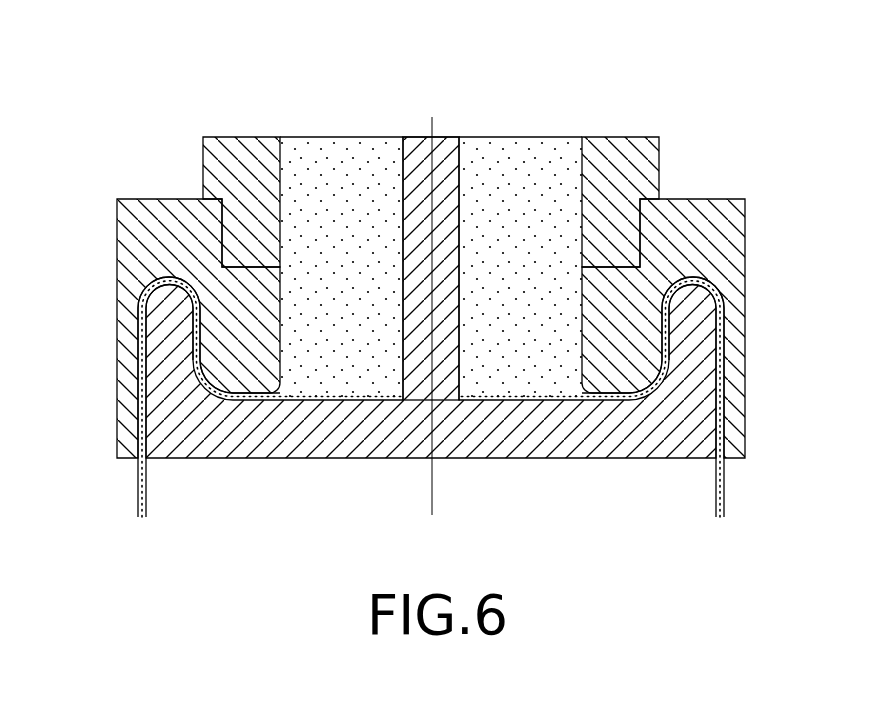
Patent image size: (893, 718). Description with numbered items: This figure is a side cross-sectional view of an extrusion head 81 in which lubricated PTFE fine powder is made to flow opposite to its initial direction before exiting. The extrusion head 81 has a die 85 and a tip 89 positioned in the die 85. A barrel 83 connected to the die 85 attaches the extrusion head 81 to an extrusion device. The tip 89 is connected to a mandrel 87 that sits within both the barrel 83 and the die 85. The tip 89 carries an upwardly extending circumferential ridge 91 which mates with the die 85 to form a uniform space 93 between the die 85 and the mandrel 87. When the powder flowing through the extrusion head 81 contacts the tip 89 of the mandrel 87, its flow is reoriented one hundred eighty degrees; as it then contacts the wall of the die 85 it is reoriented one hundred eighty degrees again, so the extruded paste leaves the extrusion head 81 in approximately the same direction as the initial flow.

The extrusion head 81 is at (247, 70).
The barrel 83 is at (203, 162).
The die 85 is at (117, 218).
The mandrel 87 is at (440, 157).
The tip 89 is at (362, 423).
The circumferential ridge 91 is at (168, 317).
The uniform space 93 is at (153, 280).